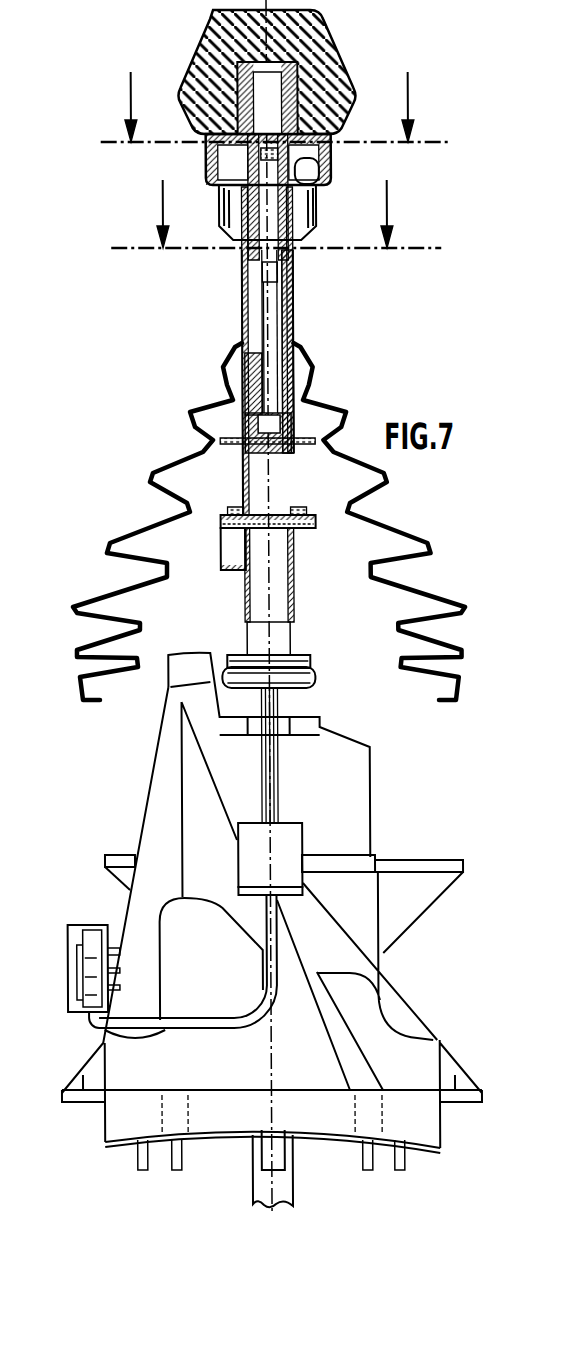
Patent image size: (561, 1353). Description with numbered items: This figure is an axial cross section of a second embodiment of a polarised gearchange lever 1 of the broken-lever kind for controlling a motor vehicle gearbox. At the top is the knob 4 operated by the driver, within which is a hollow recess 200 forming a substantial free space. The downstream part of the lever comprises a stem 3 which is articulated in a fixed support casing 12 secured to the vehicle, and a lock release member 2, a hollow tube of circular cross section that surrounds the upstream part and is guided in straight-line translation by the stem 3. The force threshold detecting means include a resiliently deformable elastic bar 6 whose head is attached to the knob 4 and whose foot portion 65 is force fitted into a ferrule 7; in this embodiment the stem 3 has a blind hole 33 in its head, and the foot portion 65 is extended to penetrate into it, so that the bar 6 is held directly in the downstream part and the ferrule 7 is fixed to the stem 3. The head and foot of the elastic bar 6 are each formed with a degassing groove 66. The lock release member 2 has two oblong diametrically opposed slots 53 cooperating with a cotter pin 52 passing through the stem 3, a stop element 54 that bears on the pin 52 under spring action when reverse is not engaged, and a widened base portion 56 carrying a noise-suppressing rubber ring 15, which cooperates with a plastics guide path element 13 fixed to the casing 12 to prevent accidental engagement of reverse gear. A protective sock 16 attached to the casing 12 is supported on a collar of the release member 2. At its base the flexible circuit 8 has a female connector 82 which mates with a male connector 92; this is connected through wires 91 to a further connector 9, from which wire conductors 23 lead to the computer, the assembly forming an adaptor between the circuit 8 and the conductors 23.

The lever 1 is at (557, 1055).
The lock release member 2 is at (239, 288).
The stem 3 is at (258, 1188).
The knob 4 is at (200, 47).
The elastic bar 6 is at (272, 267).
The ferrule 7 is at (291, 320).
The flexible circuit 8 is at (400, 806).
The connector 9 is at (78, 925).
The support casing 12 is at (155, 754).
The guide path element 13 is at (220, 668).
The ring 15 is at (315, 678).
The protective sock 16 is at (186, 408).
The wire conductors 23 is at (113, 947).
The blind hole 33 is at (278, 383).
The pin 52 is at (318, 521).
The slots 53 is at (232, 556).
The stop element 54 is at (237, 504).
The base portion 56 is at (306, 660).
The foot portion 65 is at (277, 295).
The degassing groove 66 is at (262, 307).
The connector 82 is at (298, 886).
The wires 91 is at (222, 1007).
The male connector 92 is at (298, 886).
The hollow recess 200 is at (308, 190).